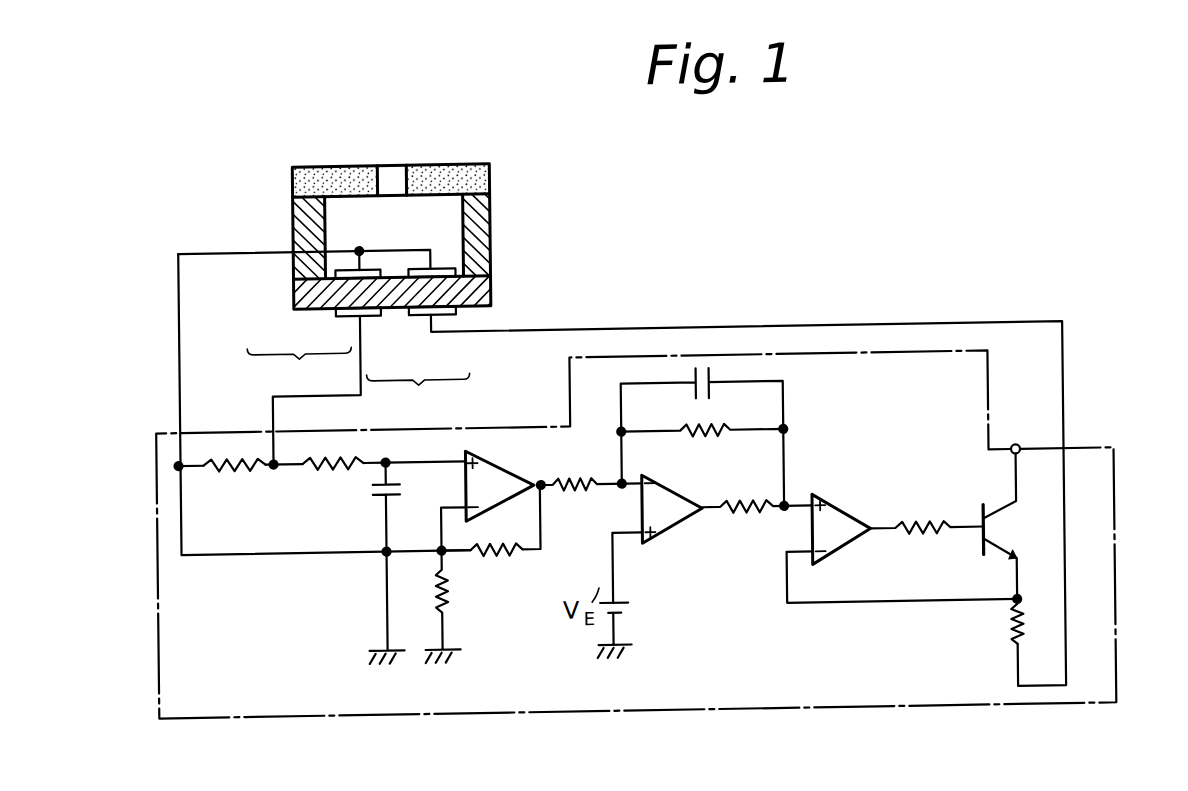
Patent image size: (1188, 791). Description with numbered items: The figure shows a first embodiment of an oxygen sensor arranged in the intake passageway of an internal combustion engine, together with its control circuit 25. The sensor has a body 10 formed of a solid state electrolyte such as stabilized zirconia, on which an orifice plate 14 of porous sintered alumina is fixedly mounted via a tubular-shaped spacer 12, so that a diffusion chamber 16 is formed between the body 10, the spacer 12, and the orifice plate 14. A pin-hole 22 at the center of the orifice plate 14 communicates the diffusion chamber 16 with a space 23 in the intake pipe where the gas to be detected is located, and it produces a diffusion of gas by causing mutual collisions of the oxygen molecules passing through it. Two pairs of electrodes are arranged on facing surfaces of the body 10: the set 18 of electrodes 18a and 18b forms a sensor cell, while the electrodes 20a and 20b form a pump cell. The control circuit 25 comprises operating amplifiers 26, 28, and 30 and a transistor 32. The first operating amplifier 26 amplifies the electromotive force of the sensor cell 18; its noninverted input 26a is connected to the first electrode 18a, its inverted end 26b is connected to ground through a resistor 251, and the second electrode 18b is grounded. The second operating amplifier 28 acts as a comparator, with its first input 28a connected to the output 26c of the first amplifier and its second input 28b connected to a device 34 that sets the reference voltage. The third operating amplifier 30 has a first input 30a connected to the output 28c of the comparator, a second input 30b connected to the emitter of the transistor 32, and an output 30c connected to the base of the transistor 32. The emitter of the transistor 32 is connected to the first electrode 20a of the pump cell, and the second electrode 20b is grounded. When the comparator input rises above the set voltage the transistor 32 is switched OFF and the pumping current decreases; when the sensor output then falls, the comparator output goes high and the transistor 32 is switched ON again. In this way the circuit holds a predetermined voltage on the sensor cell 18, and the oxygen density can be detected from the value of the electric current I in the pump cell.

The body 10 is at (494, 287).
The tubular-shaped spacer 12 is at (296, 269).
The orifice plate 14 is at (449, 167).
The diffusion chamber 16 is at (411, 223).
The sensor cell 18 is at (318, 383).
The first electrode of the sensor cell 18a is at (341, 311).
The second electrode of the sensor cell 18b is at (334, 275).
The first electrode of the pumping cell 20a is at (423, 313).
The second electrode of the pumping cell 20b is at (408, 281).
The pin-hole 22 is at (384, 176).
The space 23 is at (283, 121).
The control circuit 25 is at (320, 712).
The resistor 251 is at (436, 603).
The first operating amplifier 26 is at (508, 492).
The noninverted input 26a is at (440, 458).
The inverted end 26b is at (443, 515).
The output of the first operating amplifier 26c is at (534, 463).
The second operating amplifier 28 is at (684, 512).
The first input of the second operating amplifier 28a is at (633, 474).
The second input of the second operating amplifier 28b is at (626, 536).
The output of the second operating amplifier 28c is at (722, 505).
The third operating amplifier 30 is at (852, 539).
The first input of the third operating amplifier 30a is at (800, 497).
The second input of the third operating amplifier 30b is at (798, 560).
The output of the third operating amplifier 30c is at (884, 526).
The transistor 32 is at (980, 539).
The voltage setting device 34 is at (624, 605).
The electric current in the pumping cell I is at (1066, 301).